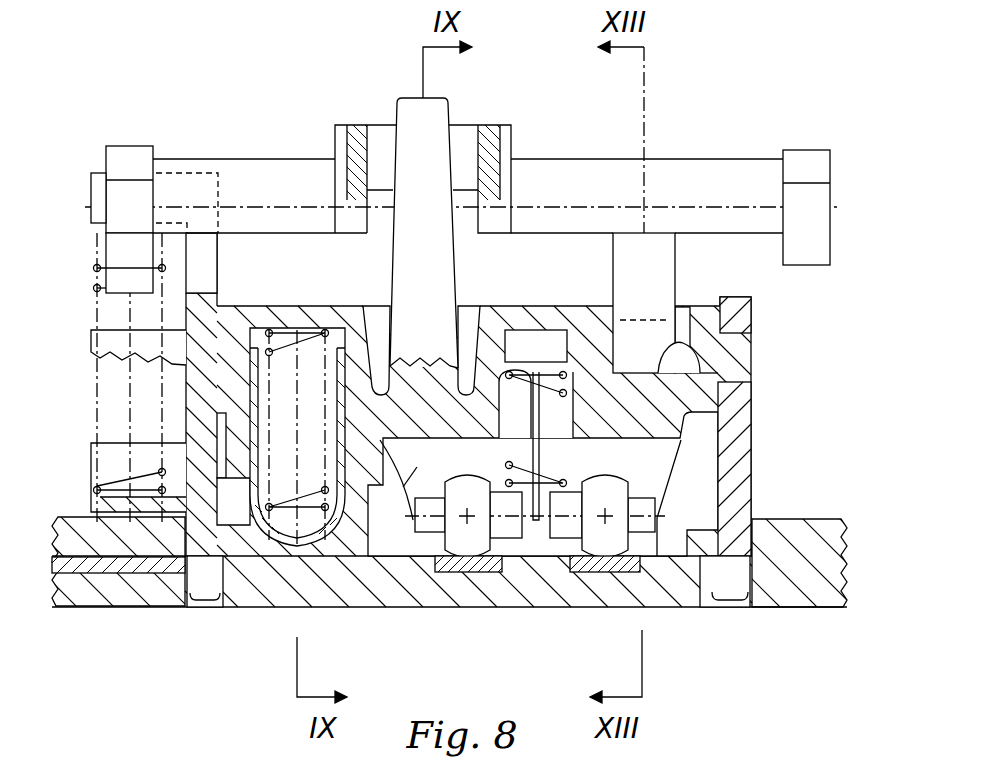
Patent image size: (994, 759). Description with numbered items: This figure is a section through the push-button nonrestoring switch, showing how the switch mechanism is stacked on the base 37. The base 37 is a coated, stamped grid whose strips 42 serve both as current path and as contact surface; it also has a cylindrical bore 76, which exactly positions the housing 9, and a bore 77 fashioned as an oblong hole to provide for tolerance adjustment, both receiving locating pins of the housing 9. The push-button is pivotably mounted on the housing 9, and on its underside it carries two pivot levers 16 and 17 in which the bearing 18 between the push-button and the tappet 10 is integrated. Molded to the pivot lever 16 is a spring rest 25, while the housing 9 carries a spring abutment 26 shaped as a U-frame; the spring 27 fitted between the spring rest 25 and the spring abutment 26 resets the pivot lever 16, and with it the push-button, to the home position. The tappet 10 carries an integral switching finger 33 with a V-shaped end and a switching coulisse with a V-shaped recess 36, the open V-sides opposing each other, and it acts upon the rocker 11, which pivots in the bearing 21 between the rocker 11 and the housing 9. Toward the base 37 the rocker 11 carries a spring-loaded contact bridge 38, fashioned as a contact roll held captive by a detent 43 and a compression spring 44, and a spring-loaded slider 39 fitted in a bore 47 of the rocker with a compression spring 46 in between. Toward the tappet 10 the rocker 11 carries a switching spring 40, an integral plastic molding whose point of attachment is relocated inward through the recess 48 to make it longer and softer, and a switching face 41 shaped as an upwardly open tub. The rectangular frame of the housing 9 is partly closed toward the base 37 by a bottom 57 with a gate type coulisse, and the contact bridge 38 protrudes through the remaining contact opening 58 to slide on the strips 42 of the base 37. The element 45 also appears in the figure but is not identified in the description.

The housing 9 is at (752, 415).
The tappet 10 is at (698, 161).
The rocker 11 is at (690, 400).
The pivot lever 16 is at (128, 146).
The pivot lever 17 is at (808, 150).
The bearing 18 is at (88, 193).
The bearing 21 is at (144, 374).
The spring rest 25 is at (110, 268).
The spring abutment 26 is at (98, 505).
The spring 27 is at (93, 288).
The switching finger 33 is at (676, 258).
The V-shaped recess 36 is at (465, 137).
The base 37 is at (70, 607).
The contact bridge 38 is at (484, 545).
The slider 39 is at (353, 557).
The switching spring 40 is at (449, 107).
The switching face 41 is at (700, 350).
The strips 42 is at (450, 574).
The detent 43 is at (536, 545).
The compression spring 44 is at (565, 456).
The sloped wall 45 is at (657, 484).
The compression spring 46 is at (283, 548).
The bore 47 is at (258, 328).
The recess 48 is at (467, 340).
The bottom 57 is at (355, 540).
The contact opening 58 is at (650, 548).
The bore 76 is at (196, 601).
The bore 77 is at (745, 600).